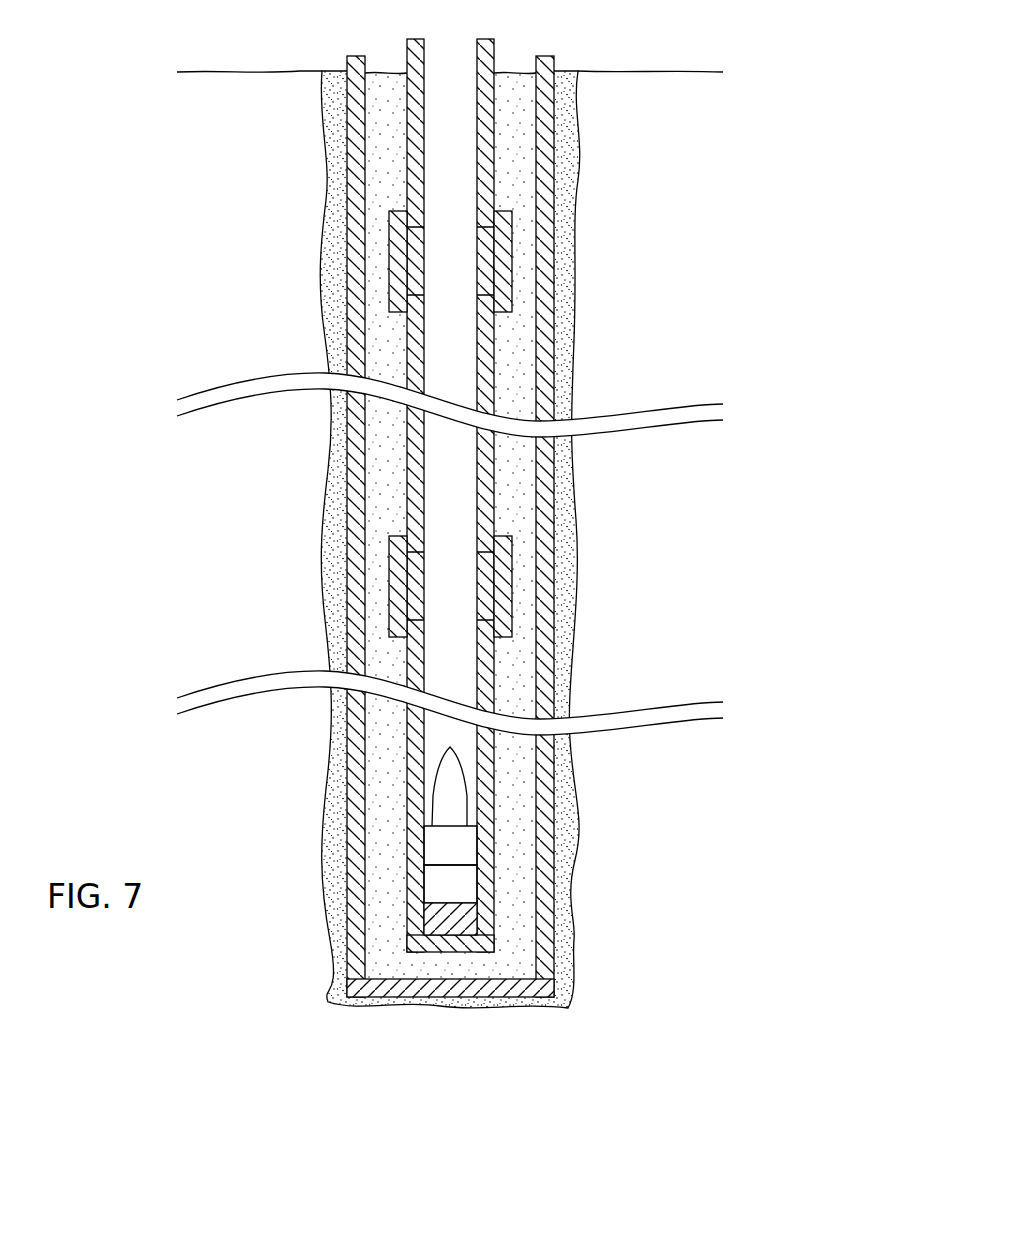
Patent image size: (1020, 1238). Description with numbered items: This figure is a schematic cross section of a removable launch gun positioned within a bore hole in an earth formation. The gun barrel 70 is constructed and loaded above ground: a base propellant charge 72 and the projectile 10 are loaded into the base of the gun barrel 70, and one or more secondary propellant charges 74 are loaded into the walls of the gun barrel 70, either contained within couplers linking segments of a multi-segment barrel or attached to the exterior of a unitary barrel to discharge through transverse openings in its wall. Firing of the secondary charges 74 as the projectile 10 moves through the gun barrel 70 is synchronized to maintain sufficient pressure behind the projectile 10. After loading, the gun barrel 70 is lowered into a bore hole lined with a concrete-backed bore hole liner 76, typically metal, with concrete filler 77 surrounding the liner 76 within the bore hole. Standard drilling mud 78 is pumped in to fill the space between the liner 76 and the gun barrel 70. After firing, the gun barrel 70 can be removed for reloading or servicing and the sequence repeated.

The projectile 10 is at (451, 799).
The gun barrel 70 is at (418, 141).
The base propellant charge 72 is at (448, 918).
The secondary propellant charges 74 is at (487, 258).
The bore hole liner 76 is at (546, 226).
The concrete filler 77 is at (330, 270).
The drilling mud 78 is at (510, 133).